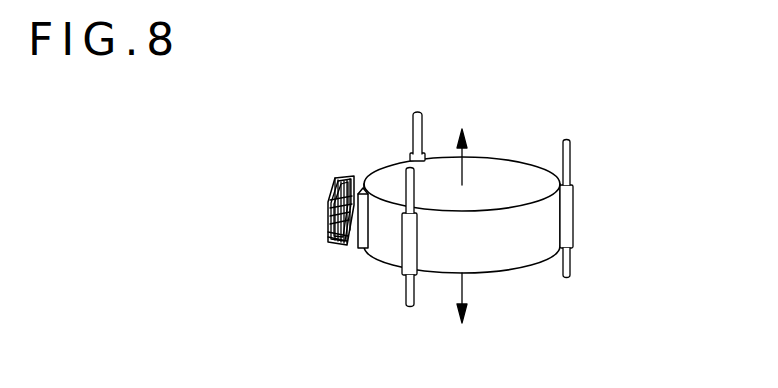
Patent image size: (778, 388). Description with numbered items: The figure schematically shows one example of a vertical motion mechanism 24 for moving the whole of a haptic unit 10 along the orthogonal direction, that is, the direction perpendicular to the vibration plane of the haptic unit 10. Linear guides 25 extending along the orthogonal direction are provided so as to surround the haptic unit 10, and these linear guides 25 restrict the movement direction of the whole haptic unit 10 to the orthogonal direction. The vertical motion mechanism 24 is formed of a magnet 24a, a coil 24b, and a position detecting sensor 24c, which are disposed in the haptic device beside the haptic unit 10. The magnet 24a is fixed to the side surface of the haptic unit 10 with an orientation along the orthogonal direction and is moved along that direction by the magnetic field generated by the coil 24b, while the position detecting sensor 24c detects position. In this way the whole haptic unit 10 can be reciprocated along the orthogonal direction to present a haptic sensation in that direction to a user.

The haptic unit 10 is at (513, 159).
The vertical motion mechanism 24 is at (320, 212).
The magnet 24a is at (363, 250).
The coil 24b is at (332, 243).
The position detecting sensor 24c is at (334, 212).
The linear guide 25 is at (422, 128).